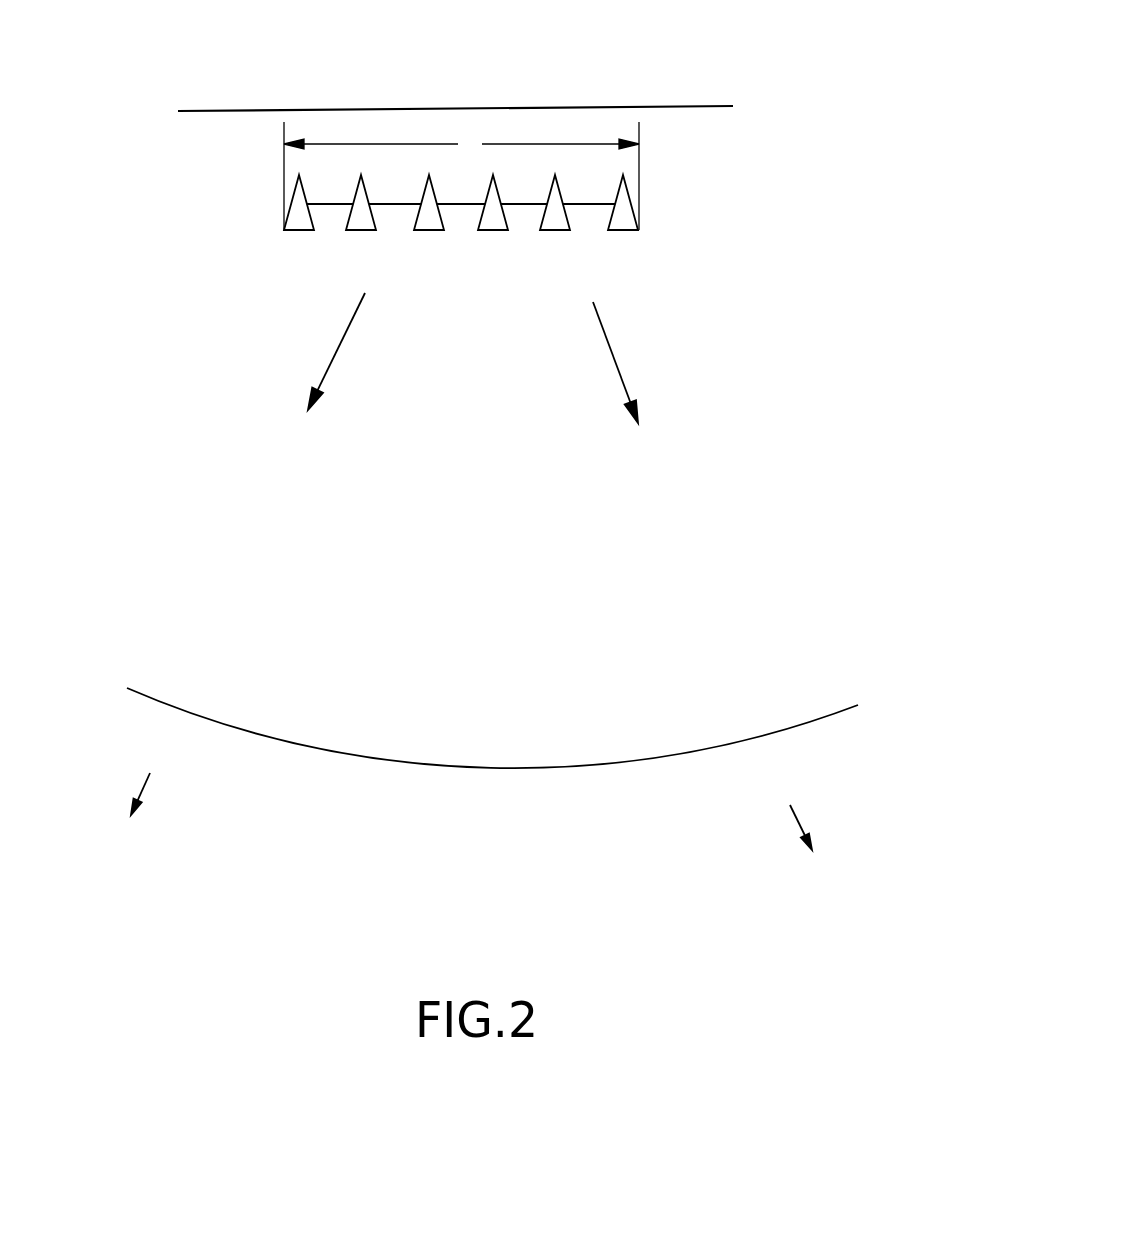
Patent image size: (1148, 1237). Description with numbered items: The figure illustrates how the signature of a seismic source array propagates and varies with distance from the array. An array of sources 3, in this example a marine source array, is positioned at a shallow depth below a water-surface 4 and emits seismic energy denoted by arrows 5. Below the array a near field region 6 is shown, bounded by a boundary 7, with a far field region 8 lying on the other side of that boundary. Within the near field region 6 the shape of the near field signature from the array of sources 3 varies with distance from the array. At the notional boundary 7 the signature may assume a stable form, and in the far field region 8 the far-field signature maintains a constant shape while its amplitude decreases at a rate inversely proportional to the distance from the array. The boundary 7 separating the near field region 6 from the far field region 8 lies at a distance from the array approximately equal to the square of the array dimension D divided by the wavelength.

The array of sources 3 is at (497, 254).
The water-surface 4 is at (700, 107).
The arrows 5 is at (338, 352).
The near field region 6 is at (577, 672).
The boundary 7 is at (452, 765).
The far field region 8 is at (572, 868).